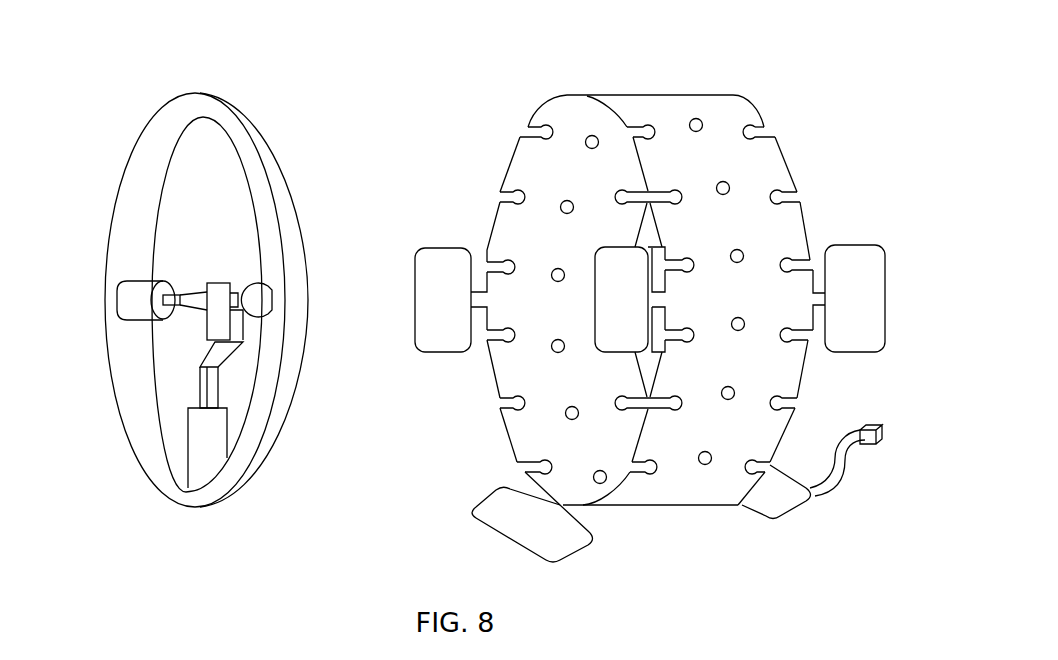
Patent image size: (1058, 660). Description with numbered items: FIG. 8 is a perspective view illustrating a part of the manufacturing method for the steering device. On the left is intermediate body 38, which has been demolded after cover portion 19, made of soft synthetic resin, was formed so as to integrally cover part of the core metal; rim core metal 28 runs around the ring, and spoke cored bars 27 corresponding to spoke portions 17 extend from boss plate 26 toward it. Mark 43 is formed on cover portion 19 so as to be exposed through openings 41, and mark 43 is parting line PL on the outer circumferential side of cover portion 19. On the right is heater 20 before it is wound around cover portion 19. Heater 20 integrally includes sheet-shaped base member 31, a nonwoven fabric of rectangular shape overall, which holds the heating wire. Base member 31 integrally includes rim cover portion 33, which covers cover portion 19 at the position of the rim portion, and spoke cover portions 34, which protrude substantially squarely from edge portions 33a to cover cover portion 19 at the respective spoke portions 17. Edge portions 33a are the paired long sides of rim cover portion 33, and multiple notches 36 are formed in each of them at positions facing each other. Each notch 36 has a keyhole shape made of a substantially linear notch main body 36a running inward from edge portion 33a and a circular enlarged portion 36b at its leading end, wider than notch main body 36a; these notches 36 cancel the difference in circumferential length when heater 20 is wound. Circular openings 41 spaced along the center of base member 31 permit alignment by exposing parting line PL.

The intermediate body 38 is at (217, 72).
The cover portion 19 is at (258, 117).
The rim core metal 28 is at (273, 163).
The cover 43 is at (278, 208).
The parting line PL is at (270, 423).
The spoke portions 17 is at (130, 293).
The boss plate 26 is at (218, 283).
The spoke cored bars 27 is at (172, 288).
The heater 20 is at (722, 66).
The base member 31 is at (693, 95).
The rim cover portion 33 is at (652, 95).
The edge portions 33a is at (505, 165).
The notches 36 is at (530, 129).
The notch main body 36a is at (766, 122).
The enlarged portion 36b is at (748, 124).
The openings 41 is at (553, 270).
The spoke cover portions 34 is at (418, 300).